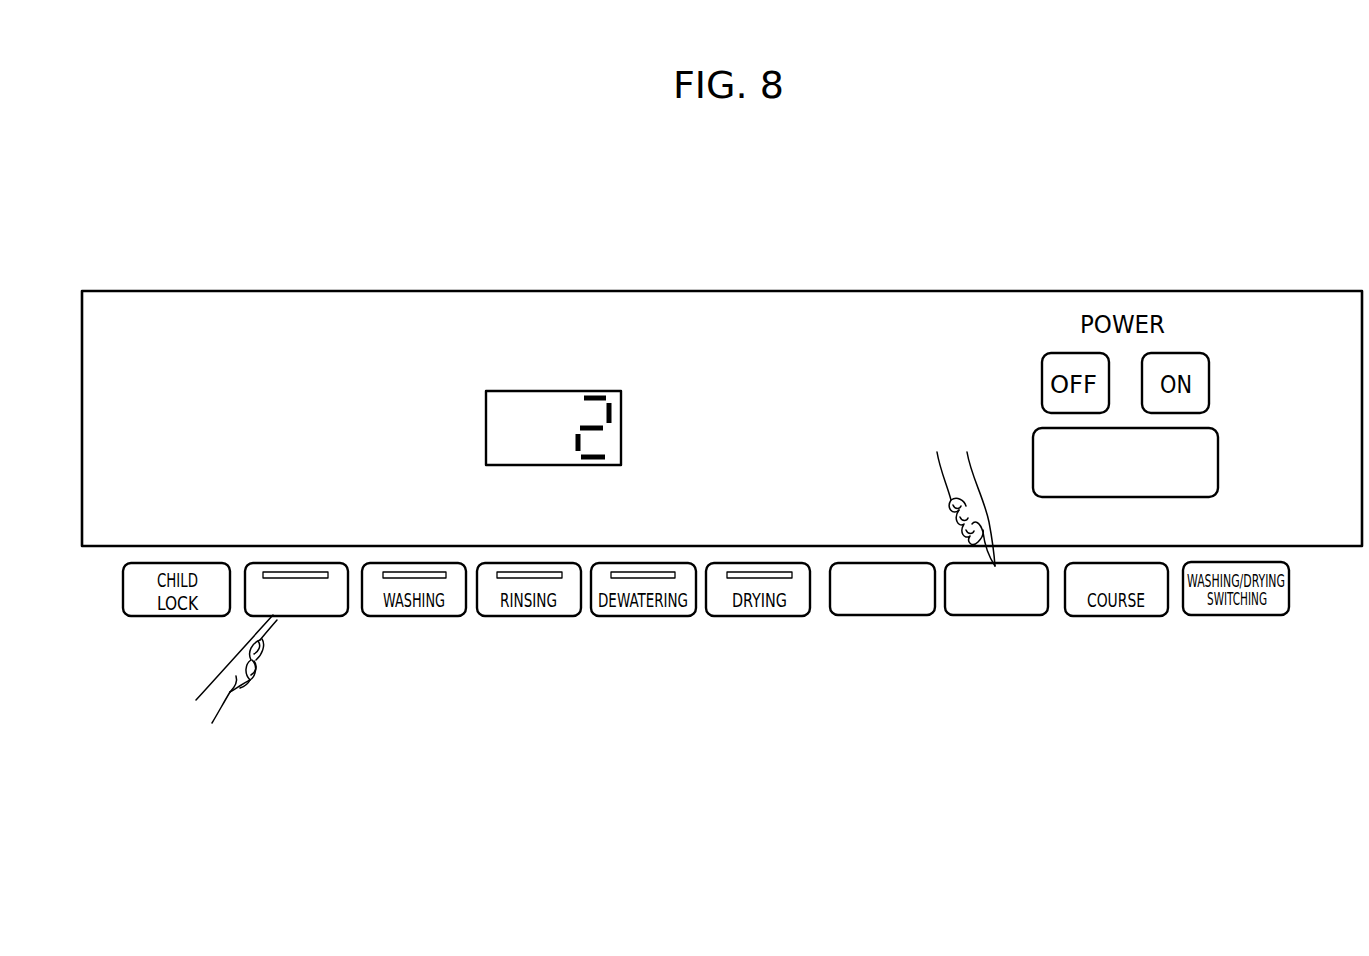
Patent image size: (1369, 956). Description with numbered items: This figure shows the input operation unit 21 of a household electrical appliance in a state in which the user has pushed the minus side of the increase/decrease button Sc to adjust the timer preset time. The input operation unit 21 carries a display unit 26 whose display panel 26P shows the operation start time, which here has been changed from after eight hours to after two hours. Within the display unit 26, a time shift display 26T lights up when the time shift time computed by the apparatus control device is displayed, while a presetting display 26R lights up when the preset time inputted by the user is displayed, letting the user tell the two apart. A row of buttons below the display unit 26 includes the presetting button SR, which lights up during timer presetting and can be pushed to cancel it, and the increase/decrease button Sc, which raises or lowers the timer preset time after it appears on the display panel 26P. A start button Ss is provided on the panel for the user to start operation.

The input operation unit 21 is at (1110, 233).
The display unit 26 is at (514, 324).
The time shift display 26T is at (486, 318).
The presetting display 26R is at (605, 318).
The display panel 26P is at (622, 421).
The presetting button SR is at (291, 619).
The increase/decrease button Sc is at (985, 616).
The start button Ss is at (1218, 452).